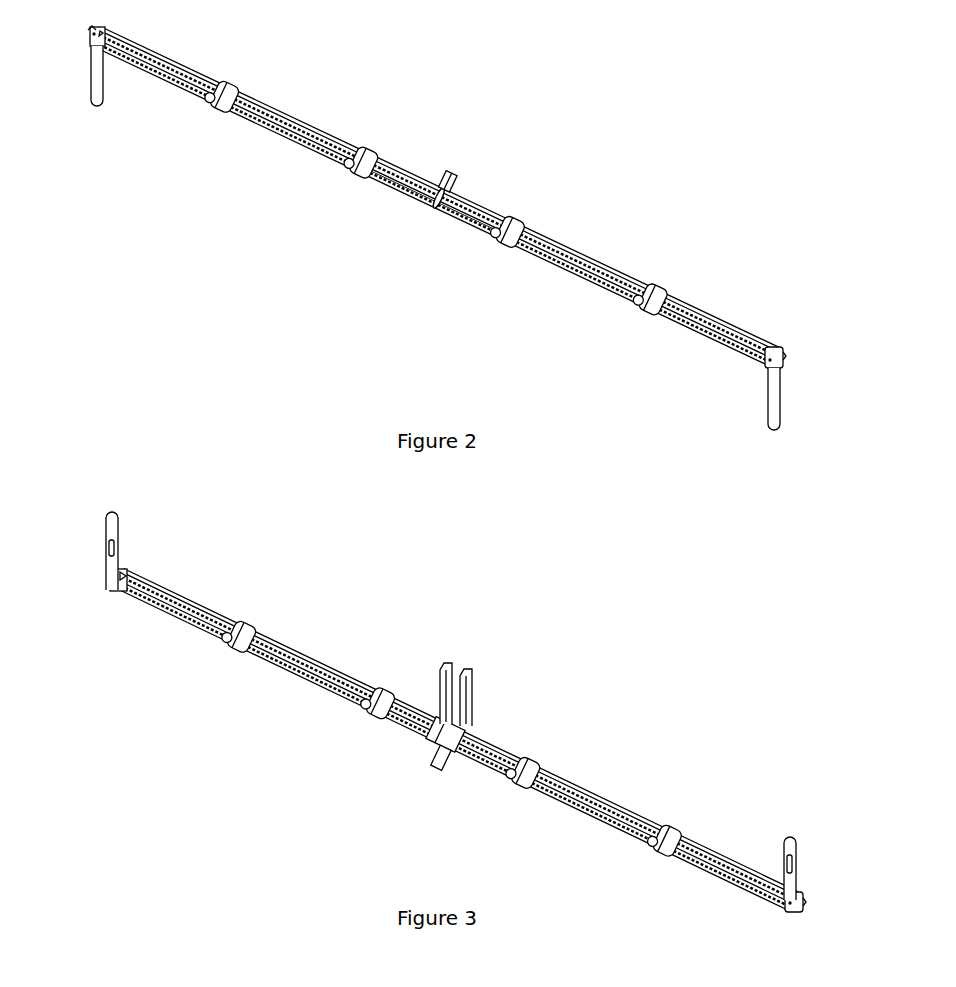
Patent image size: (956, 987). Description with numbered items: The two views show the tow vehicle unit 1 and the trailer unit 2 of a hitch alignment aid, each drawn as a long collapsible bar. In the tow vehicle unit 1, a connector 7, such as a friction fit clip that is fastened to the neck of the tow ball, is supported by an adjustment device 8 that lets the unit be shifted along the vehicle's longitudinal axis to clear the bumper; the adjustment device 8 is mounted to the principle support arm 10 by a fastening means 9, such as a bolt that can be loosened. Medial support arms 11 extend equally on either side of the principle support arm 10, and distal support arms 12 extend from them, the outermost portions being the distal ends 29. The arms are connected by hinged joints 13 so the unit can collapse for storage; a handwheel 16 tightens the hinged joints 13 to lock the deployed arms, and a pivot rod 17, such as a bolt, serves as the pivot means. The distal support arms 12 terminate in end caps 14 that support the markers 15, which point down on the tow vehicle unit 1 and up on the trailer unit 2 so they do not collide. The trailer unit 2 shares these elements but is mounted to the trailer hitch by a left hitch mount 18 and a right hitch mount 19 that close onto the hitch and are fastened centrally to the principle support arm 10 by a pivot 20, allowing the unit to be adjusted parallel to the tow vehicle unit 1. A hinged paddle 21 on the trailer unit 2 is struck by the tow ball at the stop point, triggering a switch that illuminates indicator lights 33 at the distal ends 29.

In FIG. 2, the tow vehicle unit 1 is at (625, 200).
In FIG. 3, the trailer unit 2 is at (628, 720).
In FIG. 2, the connector 7 is at (418, 212).
In FIG. 2, the adjustment device 8 is at (455, 182).
In FIG. 2, the fastening means 9 is at (438, 178).
In FIG. 2, the principle support arm 10 is at (414, 178).
In FIG. 3, the principle support arm 10 is at (420, 700).
In FIG. 2, the medial support arms 11 is at (325, 112).
In FIG. 3, the medial support arms 11 is at (300, 635).
In FIG. 2, the distal support arms 12 is at (182, 62).
In FIG. 3, the distal support arms 12 is at (182, 600).
In FIG. 2, the hinged joints 13 is at (232, 84).
In FIG. 3, the hinged joints 13 is at (253, 625).
In FIG. 2, the end caps 14 is at (778, 348).
In FIG. 3, the end caps 14 is at (120, 592).
In FIG. 2, the markers 15 is at (97, 108).
In FIG. 3, the markers 15 is at (110, 516).
In FIG. 2, the handwheel 16 is at (502, 242).
In FIG. 3, the handwheel 16 is at (370, 715).
In FIG. 2, the pivot rod 17 is at (212, 102).
In FIG. 3, the pivot rod 17 is at (230, 648).
In FIG. 3, the left hitch mount 18 is at (455, 662).
In FIG. 3, the right hitch mount 19 is at (476, 668).
In FIG. 3, the pivot 20 is at (430, 742).
In FIG. 3, the hinged paddle 21 is at (456, 765).
In FIG. 2, the distal ends 29 is at (90, 29).
In FIG. 3, the distal ends 29 is at (125, 570).
In FIG. 3, the indicator lights 33 is at (108, 552).